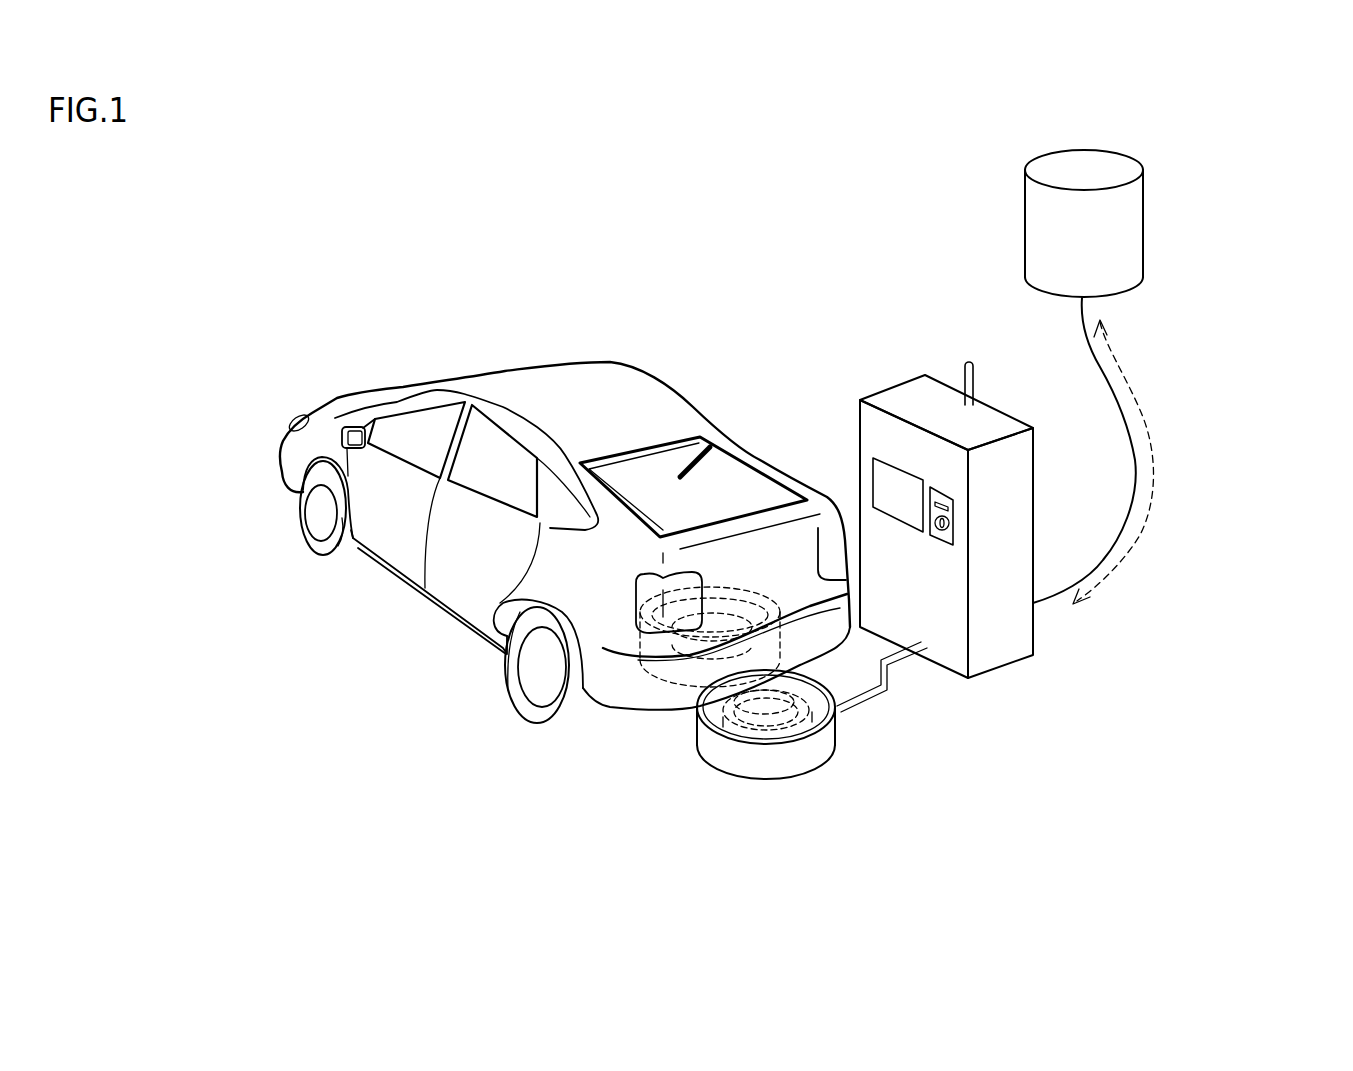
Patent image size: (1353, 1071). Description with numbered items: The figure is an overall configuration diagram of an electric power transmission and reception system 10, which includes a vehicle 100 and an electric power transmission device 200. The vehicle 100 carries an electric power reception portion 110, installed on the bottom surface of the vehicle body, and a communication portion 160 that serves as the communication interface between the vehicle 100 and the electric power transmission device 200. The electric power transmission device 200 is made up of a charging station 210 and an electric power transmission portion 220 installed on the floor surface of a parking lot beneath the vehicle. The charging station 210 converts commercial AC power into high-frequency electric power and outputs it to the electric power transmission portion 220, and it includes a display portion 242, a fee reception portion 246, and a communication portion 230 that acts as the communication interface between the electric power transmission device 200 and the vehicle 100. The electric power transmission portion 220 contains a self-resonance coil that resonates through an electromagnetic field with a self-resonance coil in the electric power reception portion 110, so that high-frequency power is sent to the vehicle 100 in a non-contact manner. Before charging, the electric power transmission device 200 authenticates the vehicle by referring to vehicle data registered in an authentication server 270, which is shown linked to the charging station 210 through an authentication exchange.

The electric power transmission and reception system 10 is at (247, 180).
The vehicle 100 is at (530, 377).
The electric power reception portion 110 is at (667, 675).
The communication portion 160 is at (708, 463).
The electric power transmission device 200 is at (1088, 675).
The charging station 210 is at (1037, 444).
The electric power transmission portion 220 is at (832, 738).
The communication portion 230 is at (975, 381).
The display portion 242 is at (883, 458).
The fee reception portion 246 is at (954, 523).
The authentication server 270 is at (1086, 150).